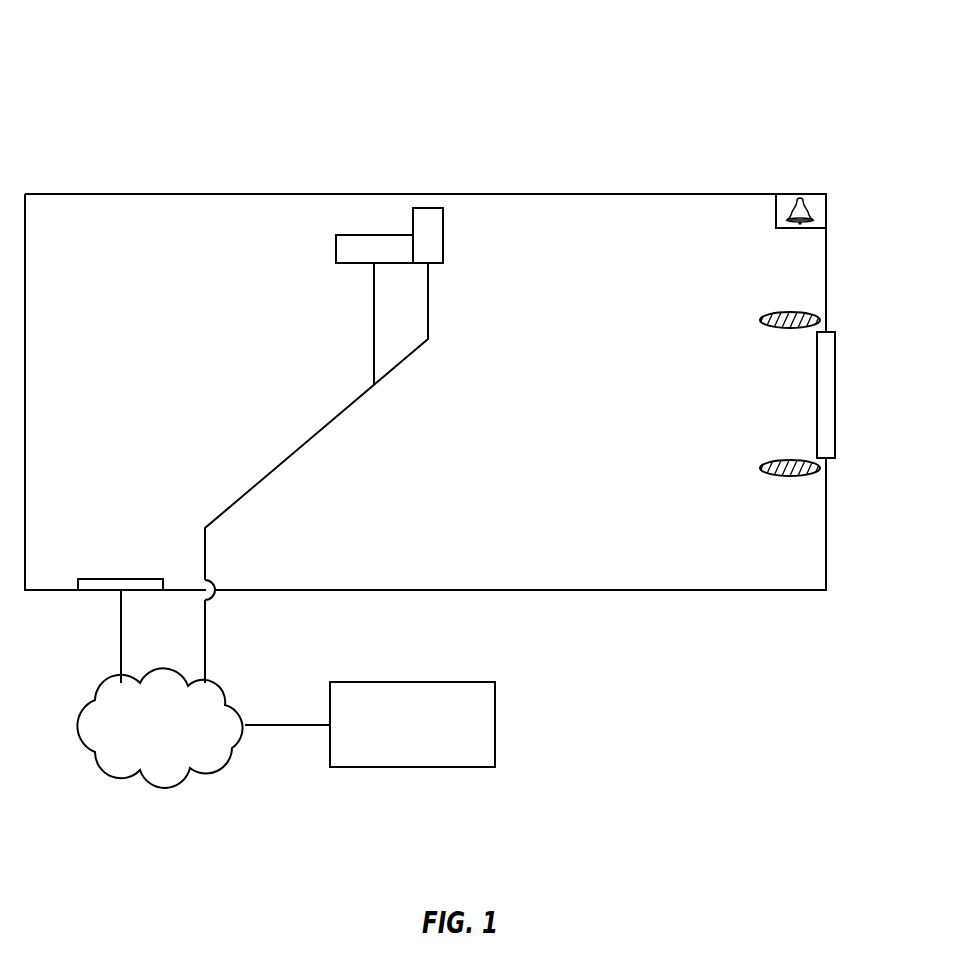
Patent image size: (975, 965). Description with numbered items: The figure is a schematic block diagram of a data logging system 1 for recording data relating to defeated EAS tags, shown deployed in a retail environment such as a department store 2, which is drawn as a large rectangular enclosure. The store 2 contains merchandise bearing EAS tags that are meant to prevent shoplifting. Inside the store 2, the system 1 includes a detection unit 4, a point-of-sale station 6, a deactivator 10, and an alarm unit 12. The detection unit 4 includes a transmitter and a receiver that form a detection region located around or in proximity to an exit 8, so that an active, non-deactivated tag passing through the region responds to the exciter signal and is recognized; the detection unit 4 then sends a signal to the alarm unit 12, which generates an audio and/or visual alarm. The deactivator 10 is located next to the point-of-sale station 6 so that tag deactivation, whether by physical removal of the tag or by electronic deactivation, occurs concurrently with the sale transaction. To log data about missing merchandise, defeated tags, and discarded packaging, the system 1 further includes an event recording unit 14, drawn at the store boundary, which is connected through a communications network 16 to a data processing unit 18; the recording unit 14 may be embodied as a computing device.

The data logging system 1 is at (247, 49).
The department store 2 is at (572, 185).
The detection unit 4 is at (818, 320).
The point-of-sale station 6 is at (390, 235).
The exit 8 is at (835, 385).
The deactivator 10 is at (429, 208).
The alarm unit 12 is at (818, 202).
The event recording unit 14 is at (128, 579).
The communications network 16 is at (232, 680).
The data processing unit 18 is at (438, 682).